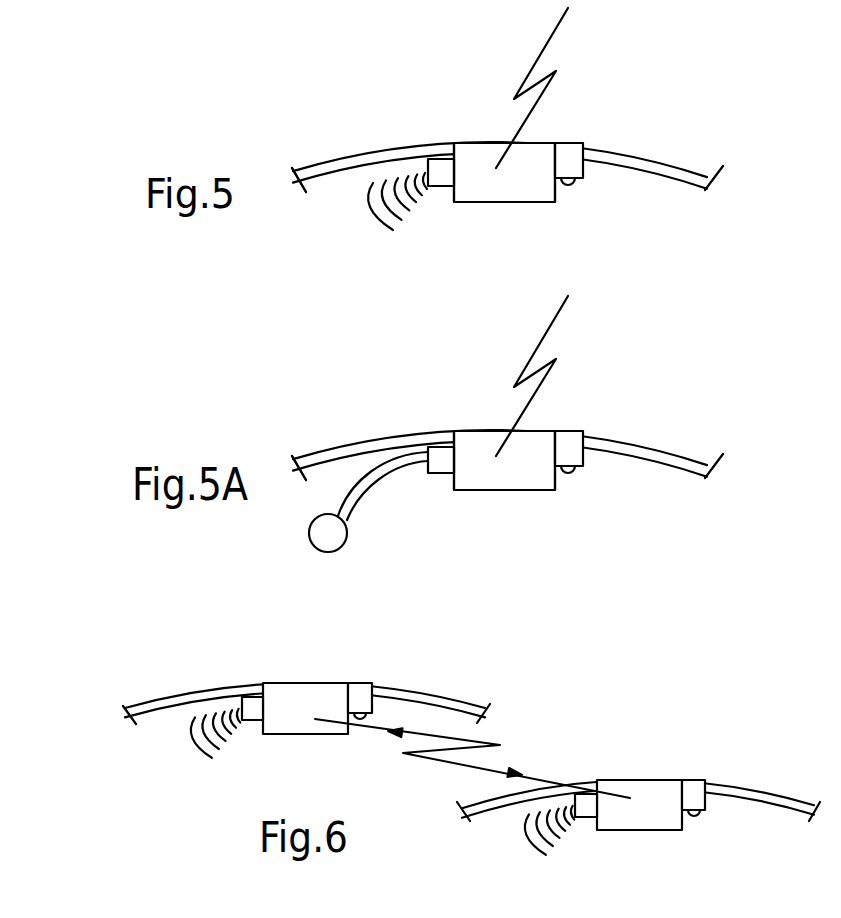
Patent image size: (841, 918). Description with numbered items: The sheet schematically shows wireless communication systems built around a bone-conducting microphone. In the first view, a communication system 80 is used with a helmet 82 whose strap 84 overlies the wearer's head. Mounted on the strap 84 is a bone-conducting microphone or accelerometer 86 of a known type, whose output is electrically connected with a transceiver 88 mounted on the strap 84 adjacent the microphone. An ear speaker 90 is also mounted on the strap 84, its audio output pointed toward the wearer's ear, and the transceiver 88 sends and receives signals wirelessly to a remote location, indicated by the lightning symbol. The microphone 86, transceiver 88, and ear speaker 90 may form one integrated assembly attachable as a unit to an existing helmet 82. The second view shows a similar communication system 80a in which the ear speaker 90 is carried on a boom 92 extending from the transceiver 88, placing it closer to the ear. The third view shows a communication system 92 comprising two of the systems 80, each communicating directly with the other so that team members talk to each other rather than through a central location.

In FIG. 5, the communication system 80 is at (345, 262).
In FIG. 5A, the communication system 80a is at (292, 558).
In FIG. 5, the helmet 82 is at (695, 152).
In FIG. 5A, the helmet 82 is at (695, 440).
In FIG. 5, the strap 84 is at (640, 150).
In FIG. 5A, the strap 84 is at (640, 438).
In FIG. 5, the bone-conducting microphone or accelerometer 86 is at (565, 155).
In FIG. 5A, the bone-conducting microphone or accelerometer 86 is at (565, 443).
In FIG. 5, the transceiver 88 is at (472, 155).
In FIG. 5A, the transceiver 88 is at (497, 478).
In FIG. 5, the ear speaker 90 is at (438, 163).
In FIG. 5A, the ear speaker 90 is at (328, 537).
In FIG. 5A, the boom 92 is at (358, 495).
In FIG. 6, the boom 92 is at (427, 795).